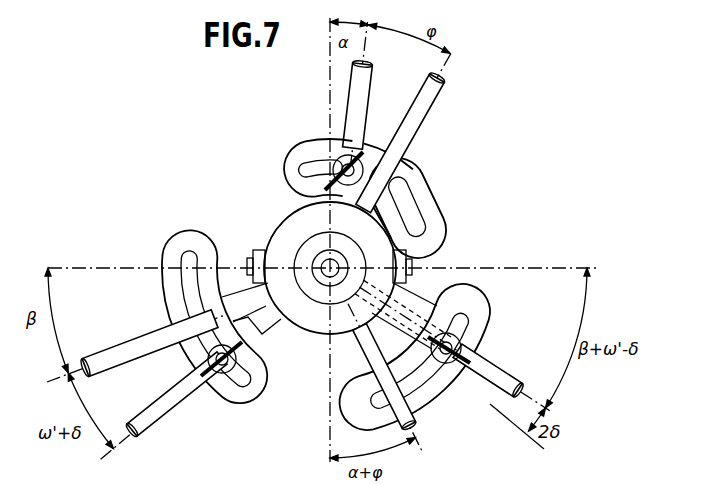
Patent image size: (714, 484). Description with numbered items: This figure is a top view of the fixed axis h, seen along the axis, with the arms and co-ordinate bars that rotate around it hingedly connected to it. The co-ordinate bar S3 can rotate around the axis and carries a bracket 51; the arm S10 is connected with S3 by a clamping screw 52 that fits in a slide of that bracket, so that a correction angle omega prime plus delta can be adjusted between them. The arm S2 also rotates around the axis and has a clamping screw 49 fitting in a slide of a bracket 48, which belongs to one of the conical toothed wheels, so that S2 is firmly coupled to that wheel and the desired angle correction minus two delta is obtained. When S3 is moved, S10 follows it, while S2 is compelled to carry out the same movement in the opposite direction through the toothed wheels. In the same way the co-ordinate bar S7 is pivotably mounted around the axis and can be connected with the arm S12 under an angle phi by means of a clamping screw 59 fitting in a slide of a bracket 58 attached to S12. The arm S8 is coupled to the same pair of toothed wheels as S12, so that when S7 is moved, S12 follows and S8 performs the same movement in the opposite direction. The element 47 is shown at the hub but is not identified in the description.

The connecting arm 47 is at (404, 311).
The bracket 48 is at (482, 303).
The clamping screw 49 is at (460, 340).
The bracket 51 is at (233, 399).
The clamping screw 52 is at (237, 362).
The bracket 58 is at (428, 215).
The clamping screw 59 is at (342, 162).
The arm S2 is at (487, 366).
The co-ordinate bar S3 is at (107, 350).
The co-ordinate bar S7 is at (372, 79).
The arm S8 is at (424, 419).
The arm S10 is at (158, 417).
The arm S12 is at (433, 109).